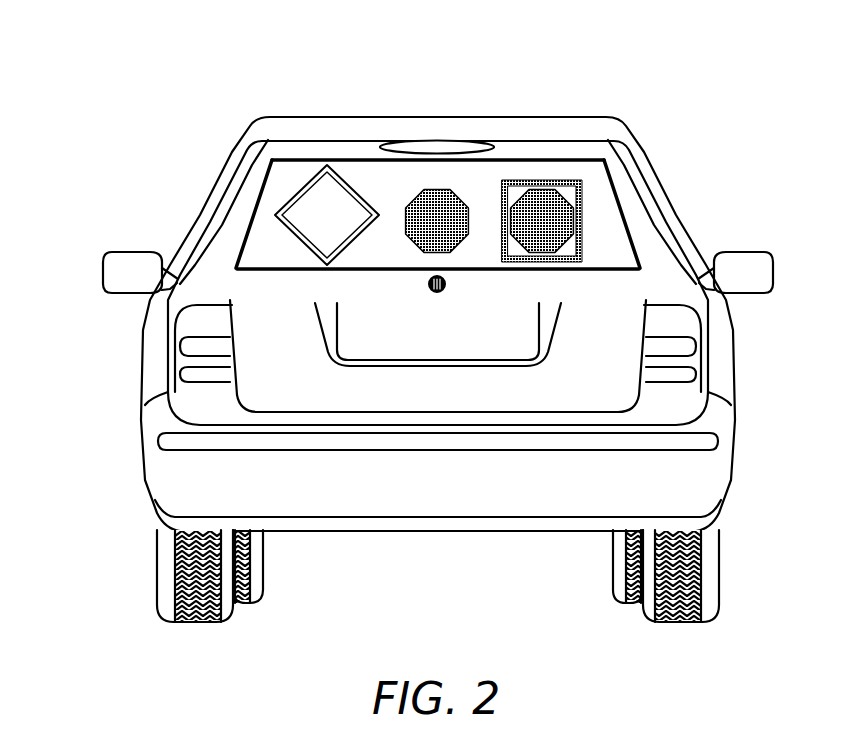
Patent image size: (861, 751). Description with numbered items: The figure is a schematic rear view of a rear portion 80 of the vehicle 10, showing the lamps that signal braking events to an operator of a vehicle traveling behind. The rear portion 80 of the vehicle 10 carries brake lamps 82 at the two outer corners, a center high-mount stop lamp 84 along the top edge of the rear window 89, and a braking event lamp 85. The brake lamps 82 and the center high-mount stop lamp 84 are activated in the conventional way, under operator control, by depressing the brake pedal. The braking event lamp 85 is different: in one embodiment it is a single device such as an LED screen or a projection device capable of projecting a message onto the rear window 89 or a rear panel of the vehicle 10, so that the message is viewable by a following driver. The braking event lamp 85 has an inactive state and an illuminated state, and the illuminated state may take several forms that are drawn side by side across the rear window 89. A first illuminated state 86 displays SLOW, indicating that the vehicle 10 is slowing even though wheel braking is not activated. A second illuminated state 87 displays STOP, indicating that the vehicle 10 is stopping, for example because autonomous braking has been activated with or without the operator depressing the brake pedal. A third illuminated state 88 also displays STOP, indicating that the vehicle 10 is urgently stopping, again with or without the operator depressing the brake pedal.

The vehicle 10 is at (140, 76).
The rear portion 80 is at (656, 186).
The brake lamps 82 is at (190, 358).
The center high-mount stop lamp (CHMSL) 84 is at (430, 146).
The braking event lamp 85 is at (283, 182).
The first illuminated state 86 is at (327, 242).
The second illuminated state 87 is at (423, 243).
The third illuminated state 88 is at (556, 243).
The rear window 89 is at (263, 242).